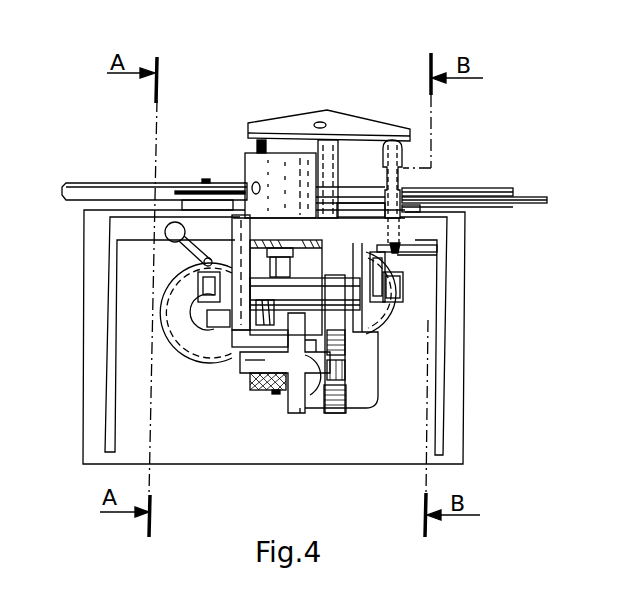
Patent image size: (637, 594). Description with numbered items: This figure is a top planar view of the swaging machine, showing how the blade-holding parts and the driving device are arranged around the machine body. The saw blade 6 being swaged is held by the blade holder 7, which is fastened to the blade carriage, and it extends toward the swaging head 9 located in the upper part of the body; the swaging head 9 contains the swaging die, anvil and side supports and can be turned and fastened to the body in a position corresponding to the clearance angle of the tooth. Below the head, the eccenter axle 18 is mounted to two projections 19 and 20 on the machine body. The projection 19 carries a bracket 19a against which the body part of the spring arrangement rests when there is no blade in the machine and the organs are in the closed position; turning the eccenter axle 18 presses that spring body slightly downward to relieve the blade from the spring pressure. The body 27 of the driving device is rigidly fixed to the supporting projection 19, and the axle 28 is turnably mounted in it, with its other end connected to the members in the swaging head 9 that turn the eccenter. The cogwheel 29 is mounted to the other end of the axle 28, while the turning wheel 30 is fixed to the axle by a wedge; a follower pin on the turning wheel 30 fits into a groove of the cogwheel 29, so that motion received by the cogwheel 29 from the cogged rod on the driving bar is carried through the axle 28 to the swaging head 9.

The saw blade 6 is at (530, 187).
The blade holder 7 is at (97, 192).
The swaging head 9 is at (244, 162).
The eccenter axle 18 is at (305, 294).
The projection 19 is at (232, 328).
The bracket 19a is at (190, 318).
The projection 20 is at (366, 318).
The body of the driving device 27 is at (240, 342).
The axle 28 is at (291, 266).
The cogwheel 29 is at (257, 358).
The turning wheel 30 is at (265, 388).